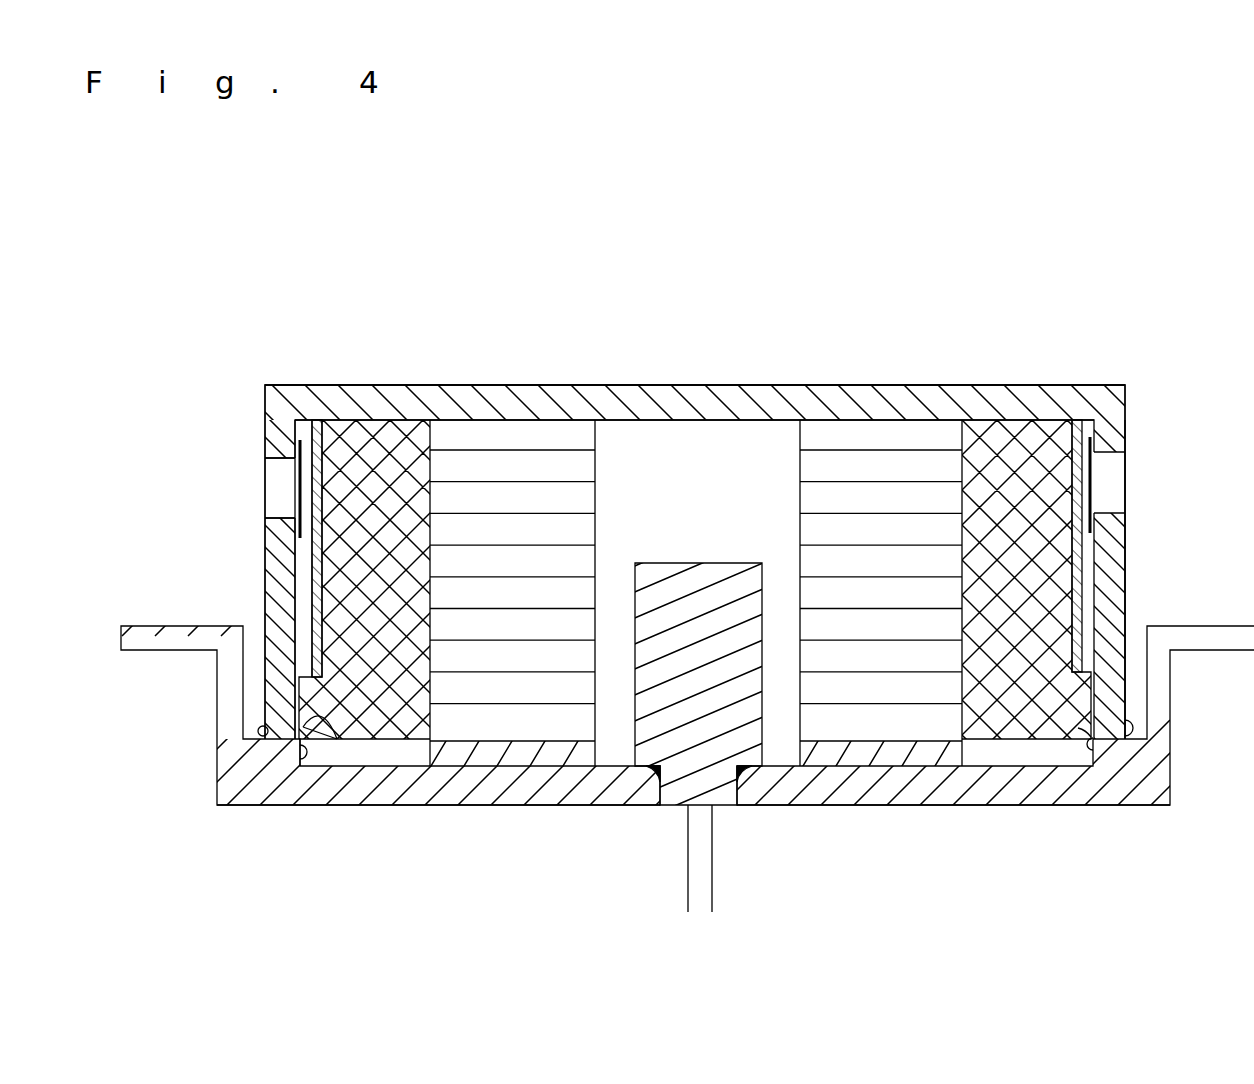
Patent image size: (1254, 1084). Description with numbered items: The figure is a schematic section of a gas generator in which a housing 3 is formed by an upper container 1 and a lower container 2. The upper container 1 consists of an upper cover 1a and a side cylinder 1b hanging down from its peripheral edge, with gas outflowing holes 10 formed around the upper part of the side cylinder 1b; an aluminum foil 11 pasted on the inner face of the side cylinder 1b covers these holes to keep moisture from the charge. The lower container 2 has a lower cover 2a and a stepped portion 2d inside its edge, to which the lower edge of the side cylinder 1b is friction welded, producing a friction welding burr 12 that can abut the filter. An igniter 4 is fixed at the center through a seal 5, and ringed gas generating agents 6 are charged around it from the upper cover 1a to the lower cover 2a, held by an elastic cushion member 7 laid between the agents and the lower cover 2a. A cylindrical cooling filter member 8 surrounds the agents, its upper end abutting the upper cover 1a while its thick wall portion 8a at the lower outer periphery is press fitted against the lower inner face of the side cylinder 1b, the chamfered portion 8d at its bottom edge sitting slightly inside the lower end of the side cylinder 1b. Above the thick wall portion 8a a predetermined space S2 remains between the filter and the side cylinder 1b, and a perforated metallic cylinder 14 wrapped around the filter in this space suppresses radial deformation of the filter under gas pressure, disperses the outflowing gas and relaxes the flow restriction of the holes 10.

The upper container 1 is at (1130, 373).
The upper cover 1a is at (712, 398).
The side cylinder 1b is at (1113, 570).
The lower container 2 is at (1140, 820).
The lower cover 2a is at (908, 790).
The stepped portion 2d is at (258, 752).
The housing 3 is at (1104, 336).
The igniter 4 is at (717, 575).
The seal 5 is at (645, 778).
The gas generating agents 6 is at (530, 440).
The cushion member 7 is at (456, 750).
The cooling filter member 8 is at (388, 440).
The thick wall portion 8a is at (322, 727).
The chamfered portion 8d is at (1085, 746).
The gas outflowing holes 10 is at (275, 488).
The aluminum foil 11 is at (296, 448).
The friction welding burr 12 is at (313, 748).
The metallic cylinder 14 is at (317, 432).
The space S2 is at (310, 593).